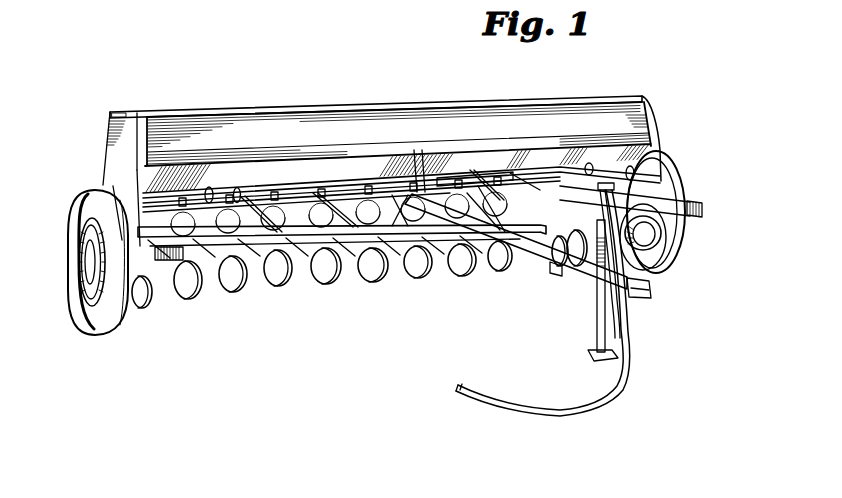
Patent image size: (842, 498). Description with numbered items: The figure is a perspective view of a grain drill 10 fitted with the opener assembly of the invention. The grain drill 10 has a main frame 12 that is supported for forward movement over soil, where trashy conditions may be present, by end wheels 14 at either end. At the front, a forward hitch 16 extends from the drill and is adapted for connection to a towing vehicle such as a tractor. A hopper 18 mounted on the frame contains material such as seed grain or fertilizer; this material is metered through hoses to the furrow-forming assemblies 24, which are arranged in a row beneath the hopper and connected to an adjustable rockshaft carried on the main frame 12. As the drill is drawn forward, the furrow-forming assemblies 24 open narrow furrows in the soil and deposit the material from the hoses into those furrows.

The grain drill 10 is at (107, 52).
The main frame 12 is at (700, 201).
The end wheels 14 is at (68, 291).
The forward hitch 16 is at (575, 272).
The hopper 18 is at (228, 122).
The furrow-forming assemblies 24 is at (207, 304).